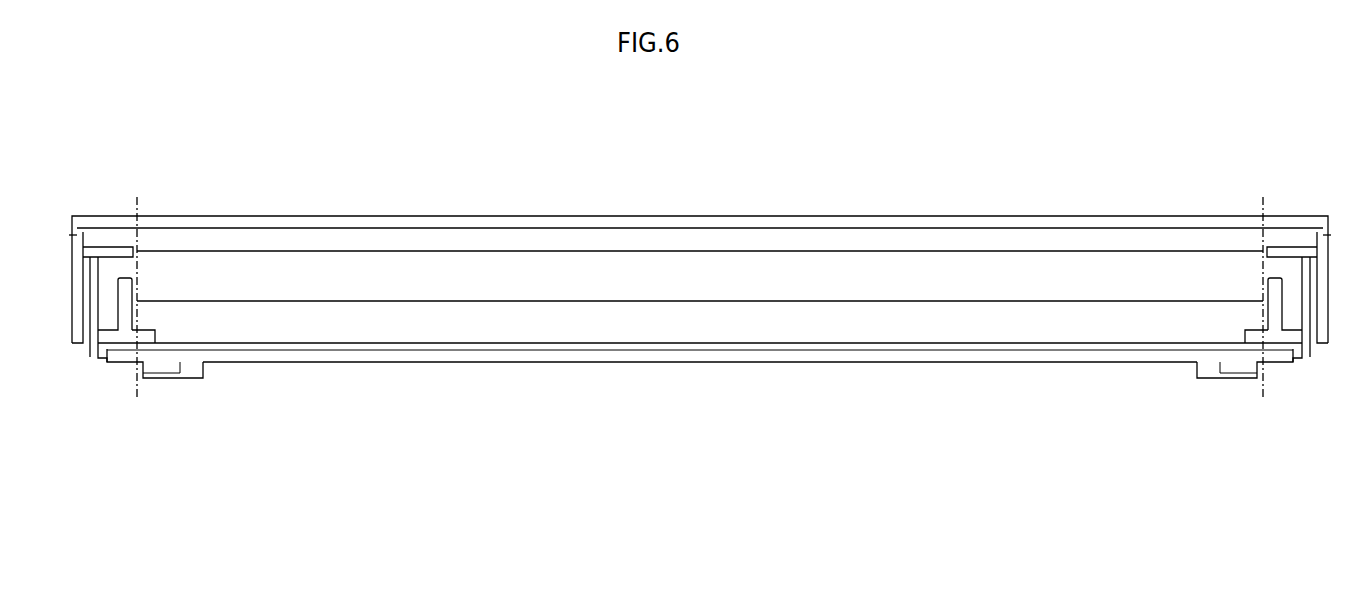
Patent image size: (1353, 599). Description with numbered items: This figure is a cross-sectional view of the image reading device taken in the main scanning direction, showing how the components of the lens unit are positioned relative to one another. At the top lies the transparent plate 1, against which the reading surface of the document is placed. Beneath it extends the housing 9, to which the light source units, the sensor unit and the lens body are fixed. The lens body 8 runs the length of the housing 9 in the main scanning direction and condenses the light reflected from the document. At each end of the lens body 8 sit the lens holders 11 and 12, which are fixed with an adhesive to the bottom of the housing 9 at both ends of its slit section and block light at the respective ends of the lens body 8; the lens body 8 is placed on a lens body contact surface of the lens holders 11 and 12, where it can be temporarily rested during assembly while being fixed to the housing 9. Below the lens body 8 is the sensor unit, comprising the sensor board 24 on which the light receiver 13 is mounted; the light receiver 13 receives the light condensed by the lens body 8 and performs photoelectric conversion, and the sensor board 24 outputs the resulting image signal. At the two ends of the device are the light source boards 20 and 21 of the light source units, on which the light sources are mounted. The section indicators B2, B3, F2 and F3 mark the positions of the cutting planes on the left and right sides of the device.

The transparent plate 1 is at (683, 222).
The lens body 8 is at (702, 270).
The housing 9 is at (73, 233).
The lens holder 11 is at (153, 335).
The lens holder 12 is at (1248, 333).
The light receiver 13 is at (572, 347).
The light source board 20 is at (88, 357).
The light source board 21 is at (1312, 357).
The sensor board 24 is at (372, 351).
The section line B2 is at (150, 203).
The section line B3 is at (150, 391).
The section line F2 is at (1261, 199).
The section line F3 is at (1261, 395).